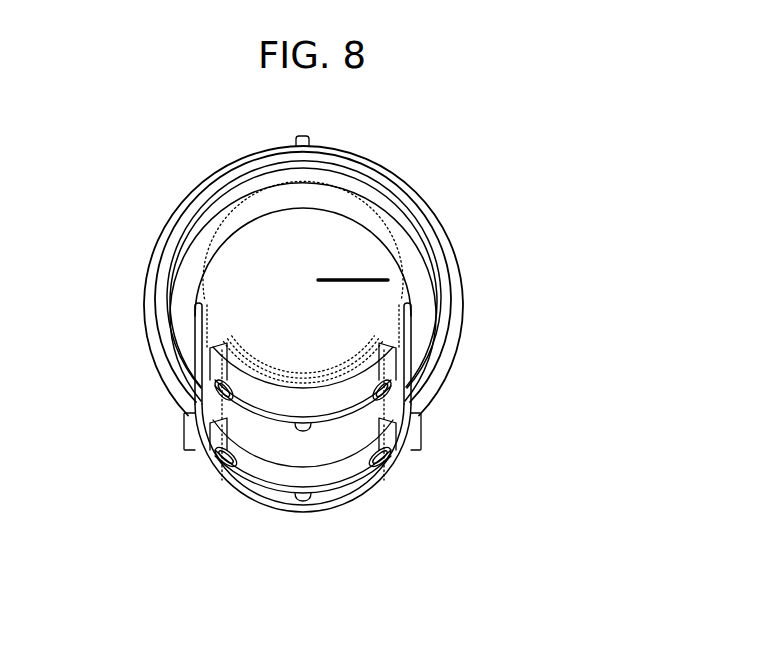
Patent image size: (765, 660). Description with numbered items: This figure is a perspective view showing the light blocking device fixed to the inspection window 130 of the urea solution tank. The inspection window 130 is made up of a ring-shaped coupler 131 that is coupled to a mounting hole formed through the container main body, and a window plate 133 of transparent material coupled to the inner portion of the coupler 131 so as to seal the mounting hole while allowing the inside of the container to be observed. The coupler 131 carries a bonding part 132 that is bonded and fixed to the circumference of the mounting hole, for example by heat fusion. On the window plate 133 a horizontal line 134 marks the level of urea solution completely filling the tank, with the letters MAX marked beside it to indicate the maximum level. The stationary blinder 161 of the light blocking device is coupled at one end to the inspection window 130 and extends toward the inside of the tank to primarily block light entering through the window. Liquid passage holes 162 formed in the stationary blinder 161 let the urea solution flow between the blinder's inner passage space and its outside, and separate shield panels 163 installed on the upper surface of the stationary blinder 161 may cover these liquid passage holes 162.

The inspection window 130 is at (311, 266).
The ring-shaped coupler 131 is at (459, 317).
The bonding part 132 is at (152, 342).
The window plate 133 is at (333, 230).
The horizontal line 134 is at (386, 279).
The stationary blinder 161 is at (296, 518).
The liquid passage holes 162 is at (227, 453).
The shield panels 163 is at (326, 471).